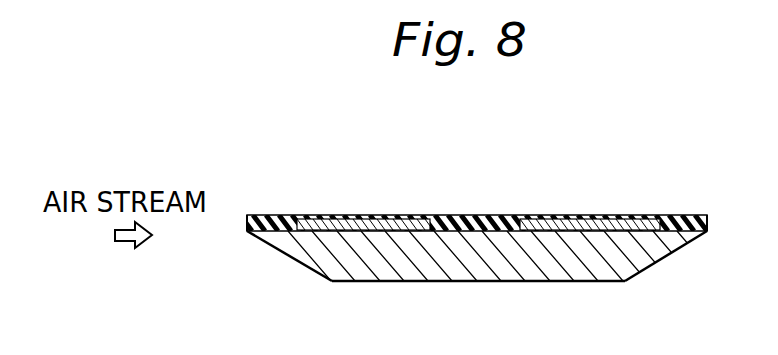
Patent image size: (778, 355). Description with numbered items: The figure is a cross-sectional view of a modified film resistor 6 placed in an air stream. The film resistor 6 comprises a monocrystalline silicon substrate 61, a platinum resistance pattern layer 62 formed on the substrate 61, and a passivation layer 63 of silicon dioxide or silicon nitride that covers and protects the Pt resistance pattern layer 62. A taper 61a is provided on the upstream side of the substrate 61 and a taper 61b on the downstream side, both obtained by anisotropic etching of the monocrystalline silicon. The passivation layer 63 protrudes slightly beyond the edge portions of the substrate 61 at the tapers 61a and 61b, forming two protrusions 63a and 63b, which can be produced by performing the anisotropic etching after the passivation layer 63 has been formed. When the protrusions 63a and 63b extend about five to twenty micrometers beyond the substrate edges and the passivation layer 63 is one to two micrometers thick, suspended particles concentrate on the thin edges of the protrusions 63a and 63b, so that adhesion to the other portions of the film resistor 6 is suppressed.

The film resistor 6 is at (474, 184).
The substrate 61 is at (483, 285).
The taper 61a is at (294, 255).
The taper 61b is at (653, 263).
The Pt resistance pattern layer 62 is at (583, 217).
The passivation layer 63 is at (470, 185).
The protrusion 63a is at (247, 216).
The protrusion 63b is at (712, 217).